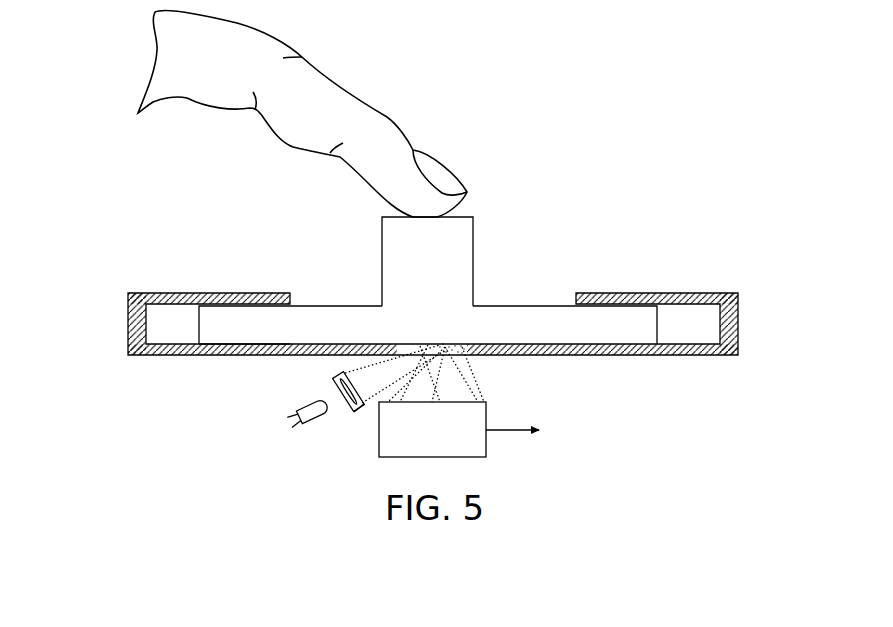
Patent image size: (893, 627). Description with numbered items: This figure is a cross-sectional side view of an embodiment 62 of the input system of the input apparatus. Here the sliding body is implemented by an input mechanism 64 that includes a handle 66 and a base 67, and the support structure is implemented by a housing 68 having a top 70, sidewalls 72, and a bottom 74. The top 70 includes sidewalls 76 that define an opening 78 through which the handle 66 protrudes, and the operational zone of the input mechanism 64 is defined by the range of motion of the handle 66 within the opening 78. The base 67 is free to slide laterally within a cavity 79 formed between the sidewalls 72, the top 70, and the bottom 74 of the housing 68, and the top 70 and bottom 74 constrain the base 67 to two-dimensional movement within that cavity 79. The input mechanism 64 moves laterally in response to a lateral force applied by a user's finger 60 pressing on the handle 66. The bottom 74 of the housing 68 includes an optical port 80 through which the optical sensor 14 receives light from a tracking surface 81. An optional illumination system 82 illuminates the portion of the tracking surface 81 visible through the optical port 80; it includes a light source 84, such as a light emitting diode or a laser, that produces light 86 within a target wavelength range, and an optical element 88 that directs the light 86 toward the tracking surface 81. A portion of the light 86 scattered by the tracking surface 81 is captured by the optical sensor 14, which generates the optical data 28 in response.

The optical sensor 14 is at (487, 410).
The optical data 28 is at (508, 432).
The user's finger 60 is at (387, 117).
The embodiment of the input system 62 is at (586, 137).
The input mechanism 64 is at (557, 236).
The handle 66 is at (477, 243).
The base 67 is at (428, 280).
The housing 68 is at (466, 318).
The top 70 is at (657, 292).
The sidewalls 72 is at (740, 320).
The bottom 74 is at (657, 356).
The sidewalls of the top 76 is at (290, 298).
The opening 78 is at (353, 264).
The cavity 79 is at (703, 332).
The optical port 80 is at (469, 369).
The tracking surface 81 is at (235, 347).
The illumination system 82 is at (296, 413).
The light source 84 is at (292, 410).
The light 86 is at (328, 392).
The optical element 88 is at (357, 415).